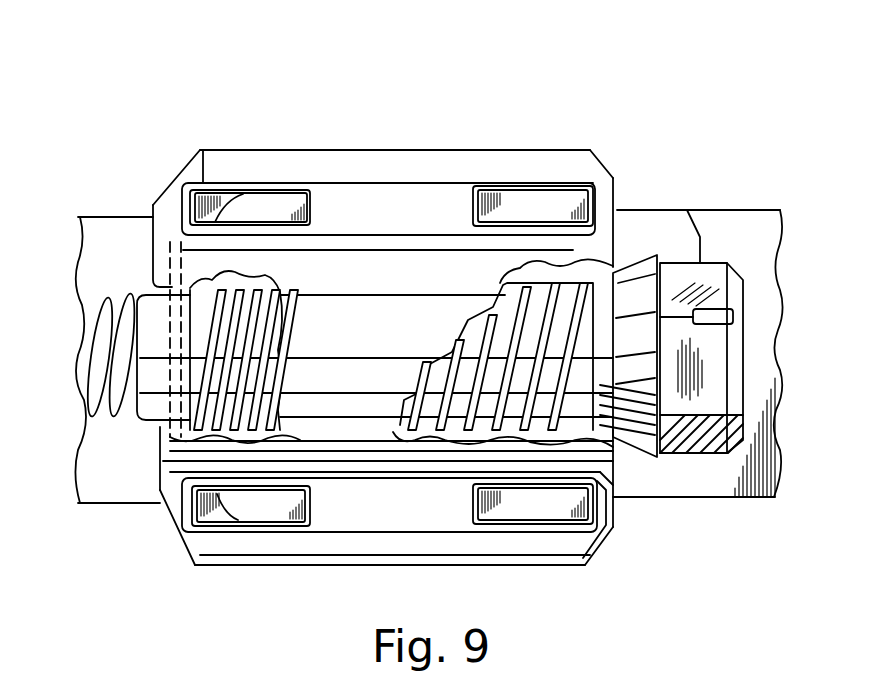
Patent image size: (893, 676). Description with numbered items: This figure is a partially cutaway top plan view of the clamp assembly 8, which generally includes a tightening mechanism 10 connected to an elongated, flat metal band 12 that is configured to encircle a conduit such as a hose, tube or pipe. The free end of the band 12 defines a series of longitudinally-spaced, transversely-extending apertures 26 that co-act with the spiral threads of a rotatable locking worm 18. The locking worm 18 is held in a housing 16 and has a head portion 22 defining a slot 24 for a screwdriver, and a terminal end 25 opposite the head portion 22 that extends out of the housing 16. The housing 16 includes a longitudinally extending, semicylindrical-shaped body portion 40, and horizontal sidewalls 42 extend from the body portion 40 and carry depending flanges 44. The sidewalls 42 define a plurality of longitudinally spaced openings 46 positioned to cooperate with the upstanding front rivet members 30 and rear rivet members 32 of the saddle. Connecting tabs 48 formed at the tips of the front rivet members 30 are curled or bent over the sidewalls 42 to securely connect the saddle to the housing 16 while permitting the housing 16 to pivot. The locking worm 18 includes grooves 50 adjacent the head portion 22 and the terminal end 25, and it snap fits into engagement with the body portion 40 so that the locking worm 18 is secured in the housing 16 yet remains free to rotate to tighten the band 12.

The clamp assembly 8 is at (176, 140).
The tightening mechanism 10 is at (228, 147).
The band 12 is at (725, 238).
The housing 16 is at (513, 143).
The locking worm 18 is at (645, 297).
The head portion 22 is at (773, 347).
The slot 24 is at (733, 317).
The terminal end 25 is at (157, 378).
The apertures 26 is at (110, 352).
The front rivet members 30 is at (218, 235).
The rear rivet members 32 is at (547, 207).
The body portion 40 is at (396, 341).
The sidewalls 42 is at (405, 222).
The flanges 44 is at (600, 160).
The openings 46 is at (204, 150).
The connecting tabs 48 is at (273, 207).
The grooves 50 is at (180, 340).